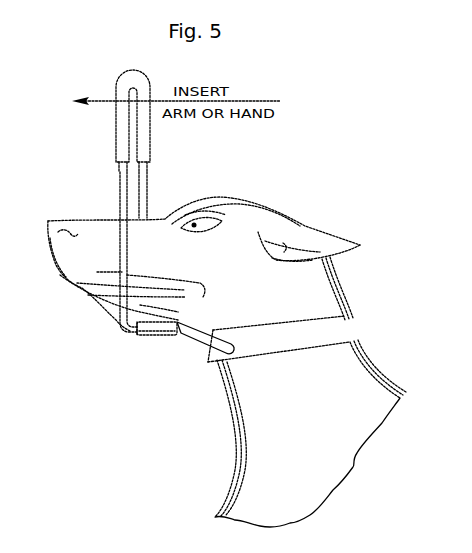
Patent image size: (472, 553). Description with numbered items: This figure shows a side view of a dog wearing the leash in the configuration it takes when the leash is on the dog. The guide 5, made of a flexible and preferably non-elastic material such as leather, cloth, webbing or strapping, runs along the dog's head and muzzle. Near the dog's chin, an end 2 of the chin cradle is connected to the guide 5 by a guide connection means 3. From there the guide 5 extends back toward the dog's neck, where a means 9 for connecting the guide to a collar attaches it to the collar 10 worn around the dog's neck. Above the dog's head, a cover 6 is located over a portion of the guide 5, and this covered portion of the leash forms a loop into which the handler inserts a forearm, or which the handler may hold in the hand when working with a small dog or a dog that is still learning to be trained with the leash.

The cover 6 is at (123, 123).
The guide 5 is at (122, 183).
The guide connection means 3 is at (146, 334).
The end 2 is at (157, 336).
The means for connecting the guide to a collar 9 is at (199, 333).
The collar 10 is at (338, 330).